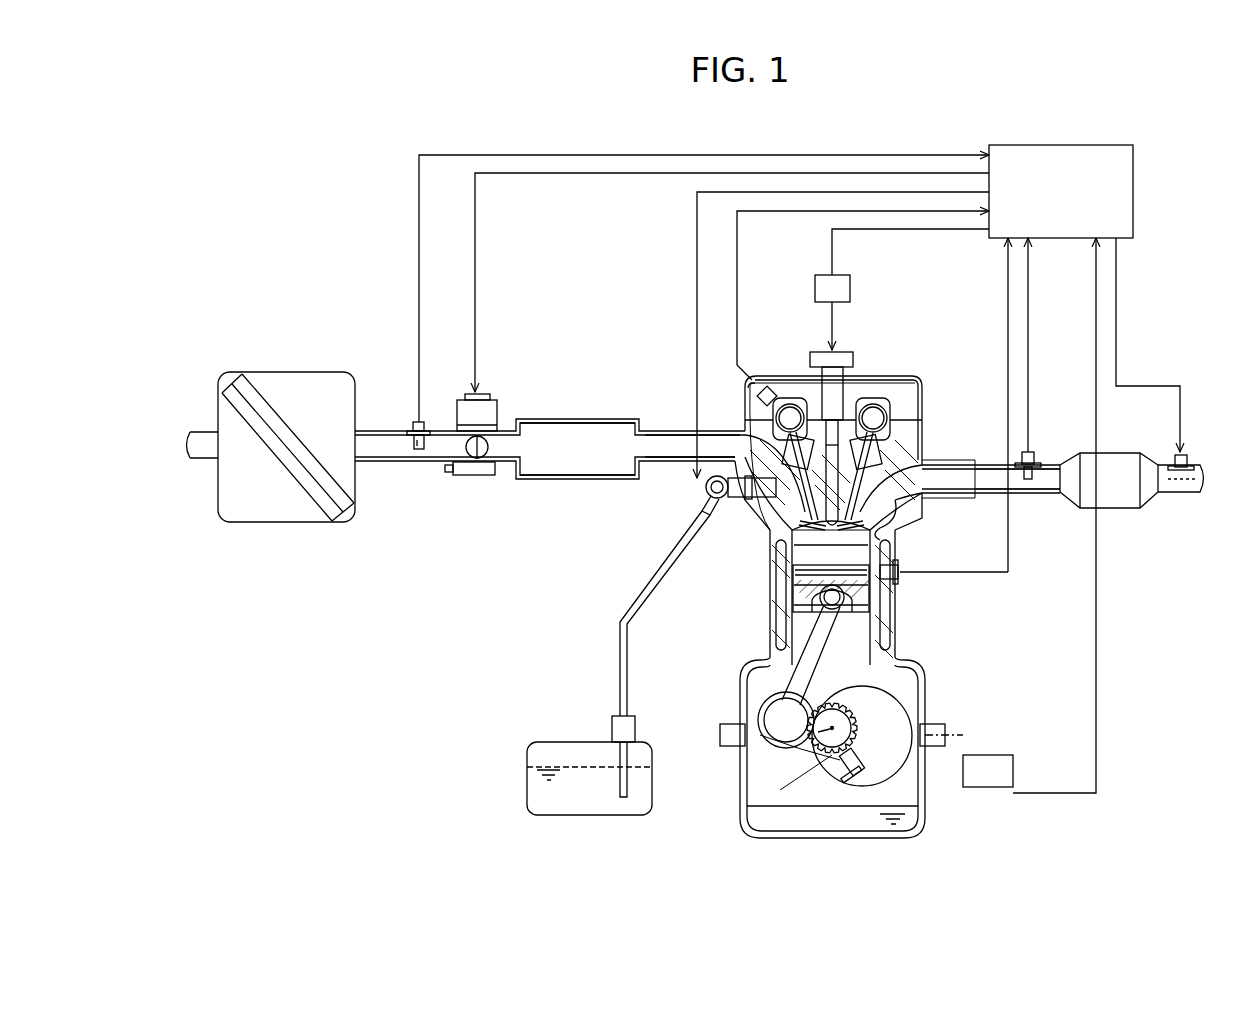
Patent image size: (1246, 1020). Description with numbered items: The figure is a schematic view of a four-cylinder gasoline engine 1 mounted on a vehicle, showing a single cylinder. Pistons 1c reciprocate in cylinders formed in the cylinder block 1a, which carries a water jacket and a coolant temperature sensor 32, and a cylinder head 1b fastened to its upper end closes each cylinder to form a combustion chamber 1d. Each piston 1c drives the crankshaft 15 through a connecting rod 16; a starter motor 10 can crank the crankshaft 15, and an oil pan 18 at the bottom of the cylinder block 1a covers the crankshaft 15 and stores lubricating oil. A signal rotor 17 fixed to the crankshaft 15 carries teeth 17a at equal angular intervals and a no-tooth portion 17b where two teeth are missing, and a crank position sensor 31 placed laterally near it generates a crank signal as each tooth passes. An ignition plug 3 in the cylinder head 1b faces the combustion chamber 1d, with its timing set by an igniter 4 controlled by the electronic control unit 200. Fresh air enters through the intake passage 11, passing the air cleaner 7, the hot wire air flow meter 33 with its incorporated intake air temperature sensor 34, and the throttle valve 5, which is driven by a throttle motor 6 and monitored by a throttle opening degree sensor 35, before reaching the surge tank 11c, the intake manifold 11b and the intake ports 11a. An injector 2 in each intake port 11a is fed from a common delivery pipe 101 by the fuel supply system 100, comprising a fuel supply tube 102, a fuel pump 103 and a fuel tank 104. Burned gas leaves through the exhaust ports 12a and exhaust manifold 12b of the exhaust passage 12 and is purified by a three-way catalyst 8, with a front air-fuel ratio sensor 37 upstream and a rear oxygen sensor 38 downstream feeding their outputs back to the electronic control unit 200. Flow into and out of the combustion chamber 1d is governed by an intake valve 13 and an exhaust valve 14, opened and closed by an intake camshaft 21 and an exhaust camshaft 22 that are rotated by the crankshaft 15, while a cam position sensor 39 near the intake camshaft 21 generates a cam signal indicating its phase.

The engine 1 is at (975, 615).
The cylinder block 1a is at (895, 610).
The cylinder head 1b is at (922, 425).
The piston 1c is at (790, 577).
The combustion chamber 1d is at (786, 566).
The injector 2 is at (752, 500).
The ignition plug 3 is at (800, 540).
The igniter 4 is at (850, 290).
The throttle valve 5 is at (489, 452).
The throttle motor 6 is at (498, 413).
The air cleaner 7 is at (290, 368).
The three-way catalyst 8 is at (1115, 510).
The starter motor 10 is at (1005, 753).
The intake passage 11 is at (655, 463).
The intake port 11a is at (752, 390).
The intake manifold 11b is at (693, 433).
The surge tank 11c is at (578, 481).
The exhaust passage 12 is at (982, 462).
The exhaust port 12a is at (926, 458).
The exhaust manifold 12b is at (962, 495).
The intake valve 13 is at (762, 530).
The exhaust valve 14 is at (905, 505).
The crankshaft 15 is at (792, 732).
The connecting rod 16 is at (790, 622).
The signal rotor 17 is at (795, 770).
The teeth 17a is at (918, 700).
The no-tooth portion 17b is at (915, 672).
The oil pan 18 is at (920, 830).
The intake camshaft 21 is at (790, 400).
The exhaust camshaft 22 is at (873, 400).
The crank position sensor 31 is at (856, 792).
The coolant temperature sensor 32 is at (905, 577).
The hot wire air flow meter 33 is at (410, 424).
The intake air temperature sensor 34 is at (430, 440).
The throttle opening degree sensor 35 is at (470, 476).
The front air-fuel ratio sensor 37 is at (1036, 450).
The rear O2 sensor 38 is at (1190, 457).
The cam position sensor 39 is at (768, 388).
The fuel supply system 100 is at (582, 626).
The delivery pipe 101 is at (700, 500).
The fuel supply tube 102 is at (642, 603).
The fuel pump 103 is at (612, 727).
The fuel tank 104 is at (527, 784).
The electronic control unit 200 is at (1135, 183).